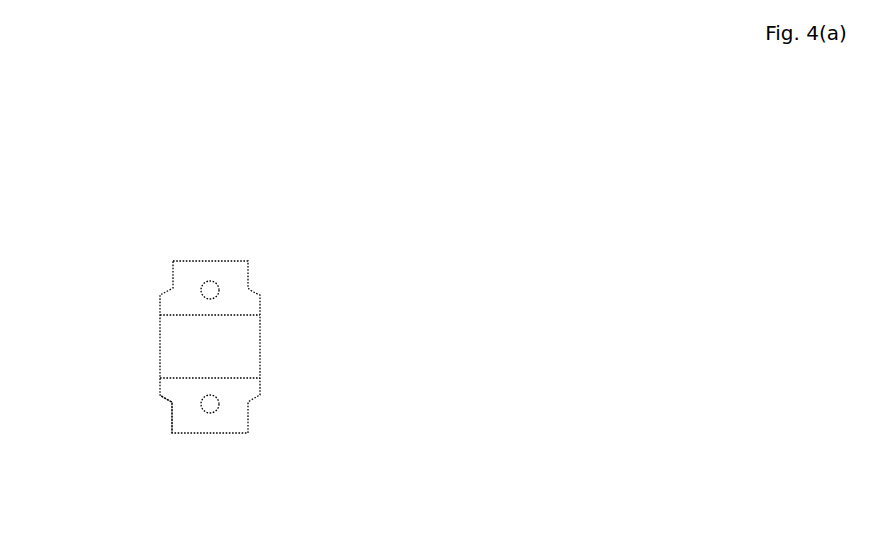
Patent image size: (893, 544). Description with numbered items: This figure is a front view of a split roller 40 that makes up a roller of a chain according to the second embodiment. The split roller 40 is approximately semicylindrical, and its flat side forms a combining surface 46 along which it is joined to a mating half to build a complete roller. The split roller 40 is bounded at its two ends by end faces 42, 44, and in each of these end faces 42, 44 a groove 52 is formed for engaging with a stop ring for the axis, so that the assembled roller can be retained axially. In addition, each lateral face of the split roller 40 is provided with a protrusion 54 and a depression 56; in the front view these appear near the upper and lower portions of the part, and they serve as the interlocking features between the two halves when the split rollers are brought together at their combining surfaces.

The split roller 40 is at (217, 163).
The end face 42 is at (248, 268).
The end face 44 is at (158, 305).
The combining surface 46 is at (230, 433).
The groove 52 is at (171, 432).
The protrusion 54 is at (203, 284).
The depression 56 is at (203, 410).